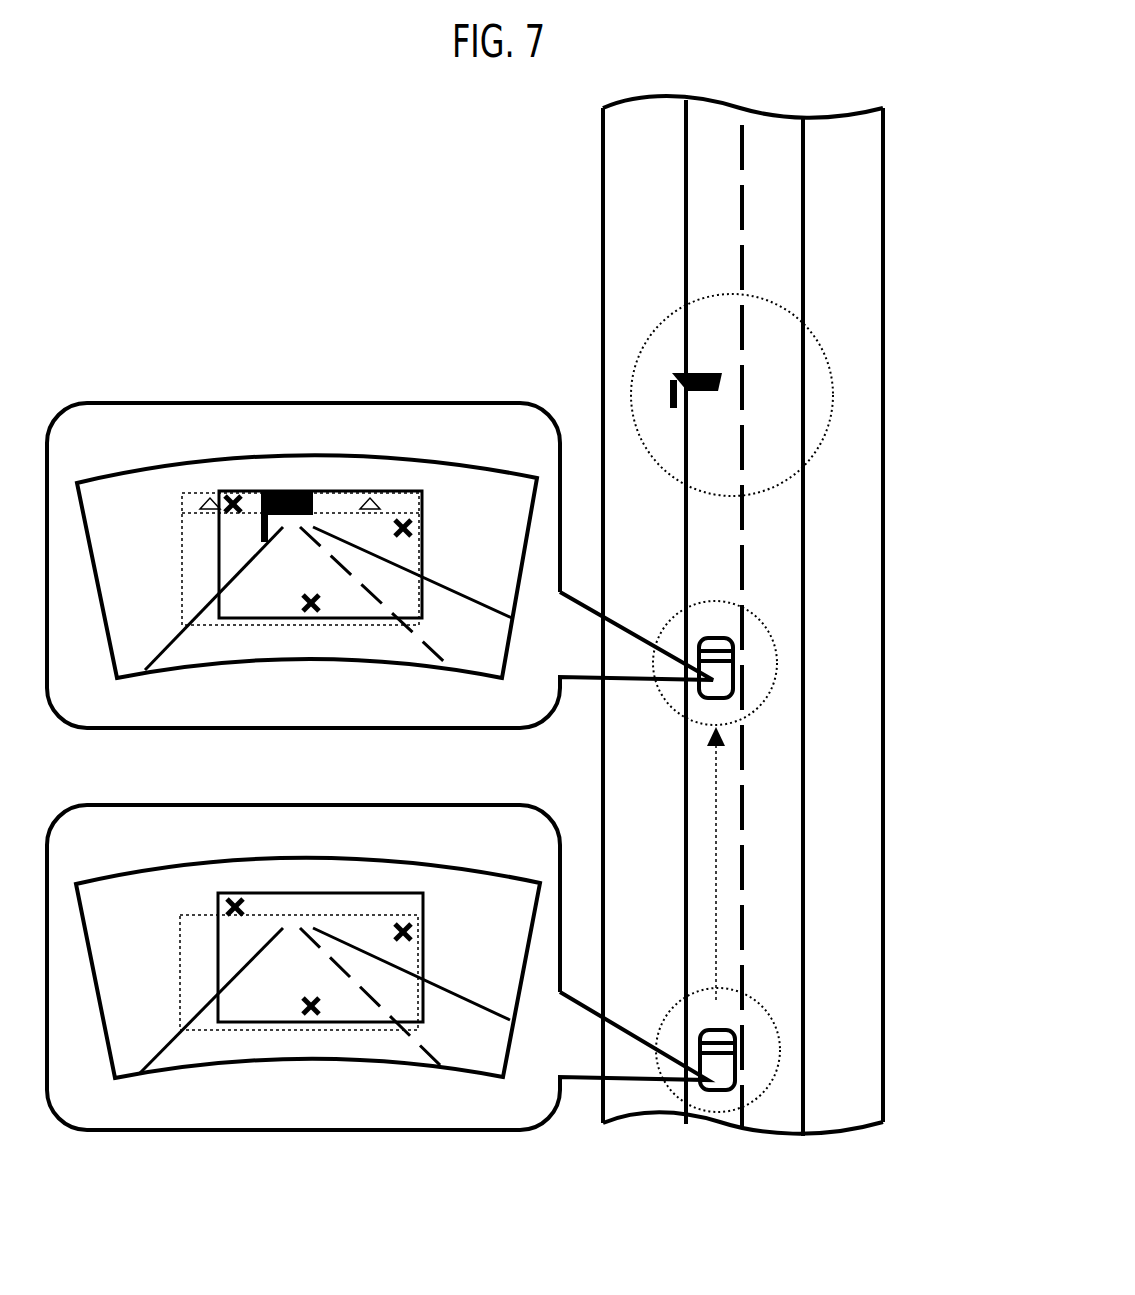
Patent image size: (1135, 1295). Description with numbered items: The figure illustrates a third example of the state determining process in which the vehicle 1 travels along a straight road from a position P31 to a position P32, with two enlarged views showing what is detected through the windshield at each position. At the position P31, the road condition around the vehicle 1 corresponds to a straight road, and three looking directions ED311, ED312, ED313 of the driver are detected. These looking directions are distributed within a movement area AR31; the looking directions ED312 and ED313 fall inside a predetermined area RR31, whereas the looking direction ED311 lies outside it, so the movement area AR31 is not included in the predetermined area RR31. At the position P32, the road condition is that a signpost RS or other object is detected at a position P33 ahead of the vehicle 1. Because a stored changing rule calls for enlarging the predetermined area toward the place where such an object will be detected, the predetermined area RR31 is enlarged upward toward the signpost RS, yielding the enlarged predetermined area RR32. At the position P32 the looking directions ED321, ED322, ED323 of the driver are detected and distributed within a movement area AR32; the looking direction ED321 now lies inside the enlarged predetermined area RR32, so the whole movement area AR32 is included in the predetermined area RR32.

The vehicle 1 is at (733, 660).
The signpost RS is at (700, 375).
The position P31 is at (770, 1095).
The position P32 is at (765, 702).
The position P33 is at (836, 415).
The movement area AR31 is at (323, 893).
The movement area AR32 is at (318, 492).
The predetermined area RR31 is at (250, 1030).
The predetermined area RR32 is at (230, 627).
The looking direction ED311 is at (230, 893).
The looking direction ED312 is at (313, 1013).
The looking direction ED313 is at (405, 927).
The looking direction ED321 is at (232, 494).
The looking direction ED322 is at (313, 612).
The looking direction ED323 is at (405, 520).